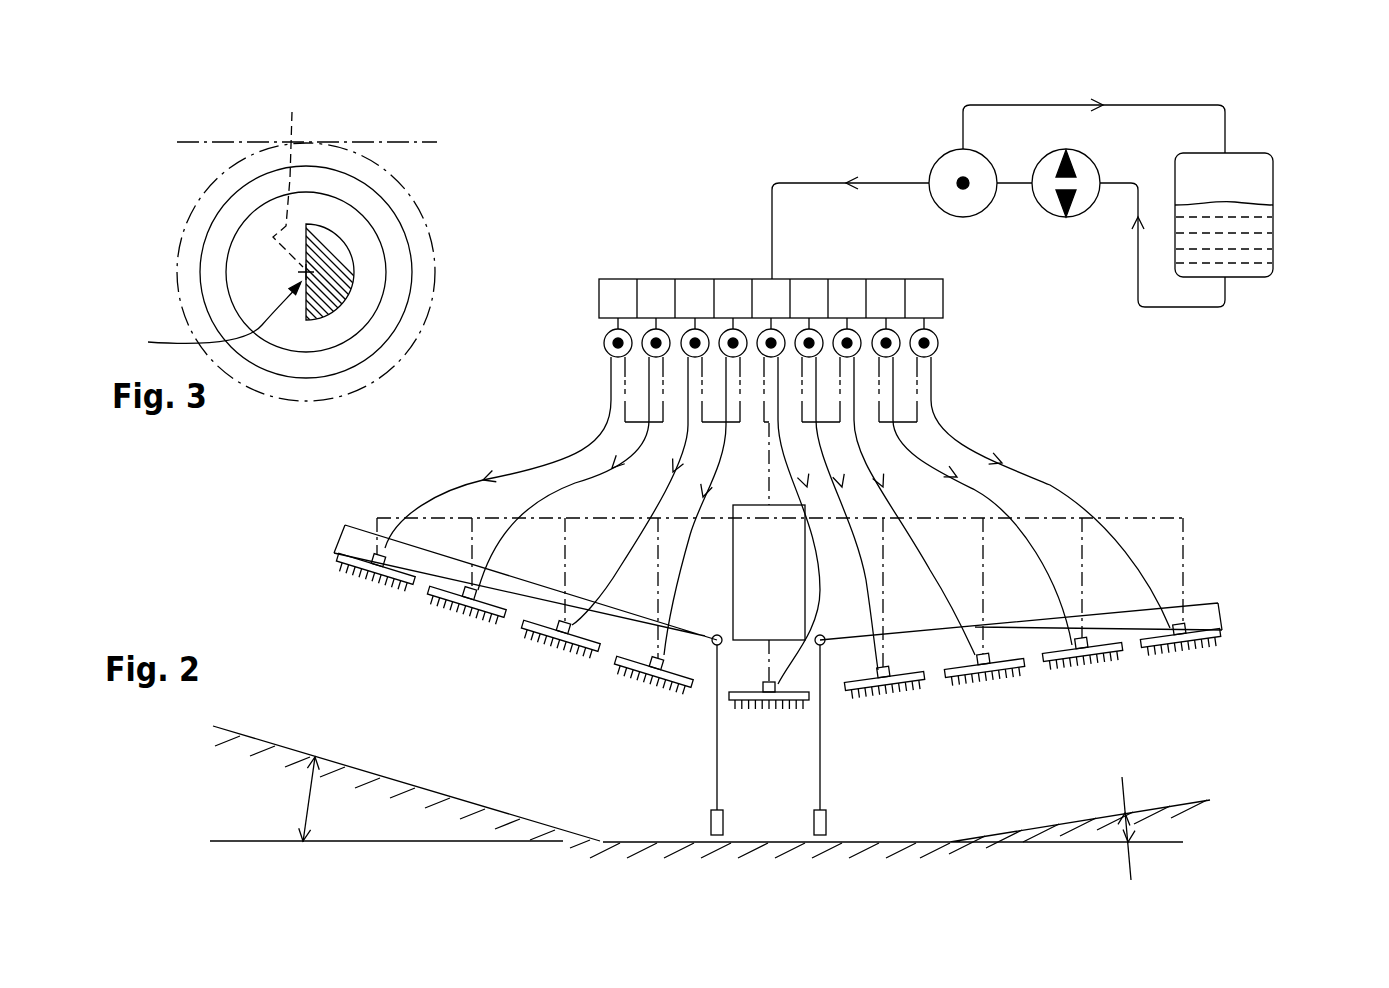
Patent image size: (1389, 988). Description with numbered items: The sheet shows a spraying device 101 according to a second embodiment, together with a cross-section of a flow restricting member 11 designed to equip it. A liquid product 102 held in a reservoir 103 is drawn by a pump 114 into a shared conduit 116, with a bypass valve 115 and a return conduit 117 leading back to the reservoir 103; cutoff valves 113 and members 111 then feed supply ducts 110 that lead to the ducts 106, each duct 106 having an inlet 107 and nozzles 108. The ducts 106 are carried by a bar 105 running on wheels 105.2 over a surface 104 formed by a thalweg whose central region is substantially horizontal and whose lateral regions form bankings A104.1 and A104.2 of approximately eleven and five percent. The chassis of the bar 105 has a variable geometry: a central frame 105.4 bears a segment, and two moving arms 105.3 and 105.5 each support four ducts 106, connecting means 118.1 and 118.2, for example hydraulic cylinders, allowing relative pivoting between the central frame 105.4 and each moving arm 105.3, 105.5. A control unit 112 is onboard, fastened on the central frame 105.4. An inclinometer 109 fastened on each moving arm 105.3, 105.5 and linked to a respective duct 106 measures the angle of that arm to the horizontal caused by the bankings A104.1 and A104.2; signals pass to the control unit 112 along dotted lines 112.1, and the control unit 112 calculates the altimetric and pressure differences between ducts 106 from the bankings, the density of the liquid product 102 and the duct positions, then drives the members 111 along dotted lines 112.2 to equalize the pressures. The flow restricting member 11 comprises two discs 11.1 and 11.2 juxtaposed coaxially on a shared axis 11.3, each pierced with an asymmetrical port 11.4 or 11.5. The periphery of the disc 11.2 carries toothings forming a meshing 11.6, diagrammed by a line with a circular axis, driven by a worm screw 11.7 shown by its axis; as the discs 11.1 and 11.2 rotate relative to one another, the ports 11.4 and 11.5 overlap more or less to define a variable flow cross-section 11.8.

In FIG. 3, the flow restricting member 11 is at (246, 408).
In FIG. 3, the disc 11.1 is at (253, 280).
In FIG. 3, the disc 11.2 is at (218, 233).
In FIG. 3, the shared axis 11.3 is at (201, 315).
In FIG. 3, the port 11.4 is at (347, 257).
In FIG. 3, the port 11.5 is at (292, 176).
In FIG. 3, the meshing 11.6 is at (203, 196).
In FIG. 3, the worm screw 11.7 is at (207, 142).
In FIG. 3, the variable flow cross-section 11.8 is at (342, 272).
In FIG. 2, the device 101 is at (1202, 364).
In FIG. 2, the liquid product 102 is at (1224, 232).
In FIG. 2, the reservoir 103 is at (1273, 192).
In FIG. 2, the surface 104 is at (1025, 820).
In FIG. 2, the bar 105 is at (367, 623).
In FIG. 2, the wheels 105.2 is at (711, 823).
In FIG. 2, the moving arm 105.3 is at (530, 580).
In FIG. 2, the central frame 105.4 is at (742, 695).
In FIG. 2, the moving arm 105.5 is at (1022, 623).
In FIG. 2, the ducts 106 is at (1222, 630).
In FIG. 2, the inlets 107 is at (1066, 643).
In FIG. 2, the nozzles 108 is at (1082, 655).
In FIG. 2, the inclinometer 109 is at (890, 685).
In FIG. 2, the supply ducts 110 is at (1062, 488).
In FIG. 2, the members 111 is at (967, 327).
In FIG. 2, the control unit 112 is at (769, 572).
In FIG. 2, the dotted lines 112.1 is at (512, 517).
In FIG. 2, the dotted lines 112.2 is at (754, 424).
In FIG. 2, the cutoff valves 113 is at (967, 272).
In FIG. 2, the pump 114 is at (1054, 149).
In FIG. 2, the bypass valve 115 is at (939, 159).
In FIG. 2, the shared conduit 116 is at (771, 250).
In FIG. 2, the return conduit 117 is at (1225, 130).
In FIG. 2, the connecting means 118.1 is at (714, 646).
In FIG. 2, the connecting means 118.2 is at (826, 646).
In FIG. 2, the banking A104.1 is at (274, 799).
In FIG. 2, the banking A104.2 is at (1092, 831).